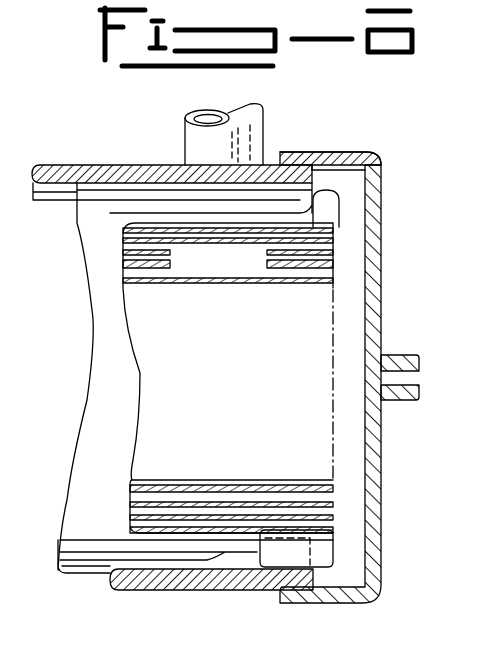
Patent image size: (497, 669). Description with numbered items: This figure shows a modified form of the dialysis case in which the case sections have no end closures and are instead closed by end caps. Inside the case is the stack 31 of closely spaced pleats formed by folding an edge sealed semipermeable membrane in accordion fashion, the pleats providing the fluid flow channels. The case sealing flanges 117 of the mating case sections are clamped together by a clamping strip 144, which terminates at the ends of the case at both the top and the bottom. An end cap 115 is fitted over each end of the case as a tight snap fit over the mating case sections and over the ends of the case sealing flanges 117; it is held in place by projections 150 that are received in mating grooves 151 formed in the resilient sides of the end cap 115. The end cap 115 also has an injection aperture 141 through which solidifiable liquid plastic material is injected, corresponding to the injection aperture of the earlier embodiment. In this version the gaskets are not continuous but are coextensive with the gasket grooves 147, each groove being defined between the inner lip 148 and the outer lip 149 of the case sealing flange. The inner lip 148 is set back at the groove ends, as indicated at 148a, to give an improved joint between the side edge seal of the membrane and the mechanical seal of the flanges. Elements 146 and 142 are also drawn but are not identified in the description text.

The end cap 115 is at (380, 257).
The injection aperture 141 is at (400, 378).
The projection 150 is at (300, 166).
The clamping strip 144 is at (48, 165).
The outer lip 149 is at (100, 185).
The tube 146 is at (172, 200).
The groove 151 is at (340, 186).
The retainer 142 is at (323, 218).
The inner lip 148 is at (200, 192).
The set back 148a is at (300, 185).
The stack 31 is at (255, 383).
The gasket groove 147 is at (100, 200).
The case sealing flange 117 is at (93, 577).